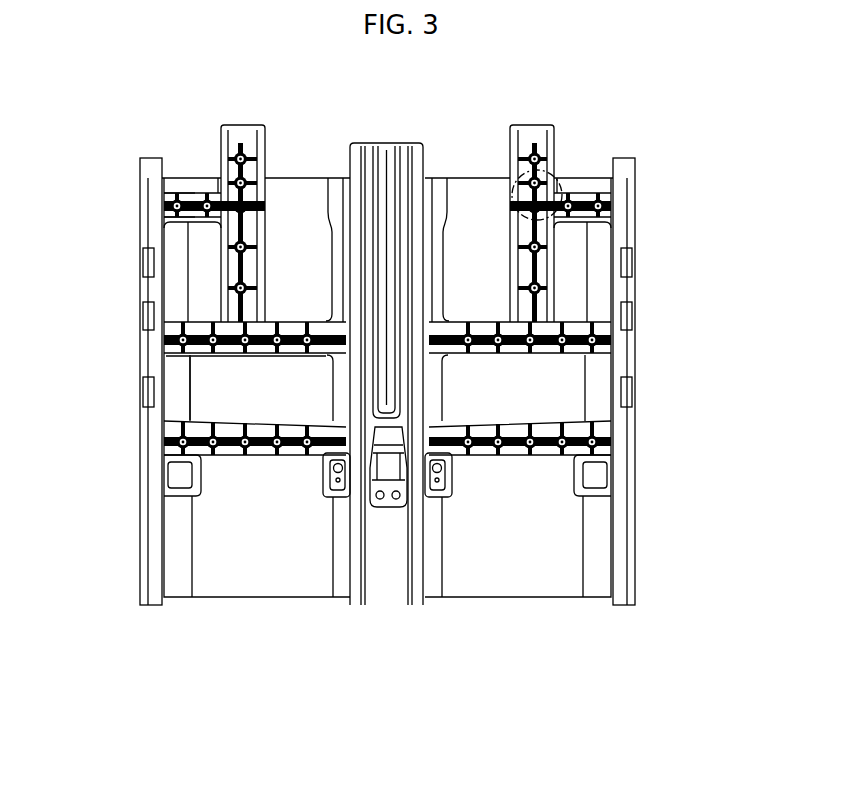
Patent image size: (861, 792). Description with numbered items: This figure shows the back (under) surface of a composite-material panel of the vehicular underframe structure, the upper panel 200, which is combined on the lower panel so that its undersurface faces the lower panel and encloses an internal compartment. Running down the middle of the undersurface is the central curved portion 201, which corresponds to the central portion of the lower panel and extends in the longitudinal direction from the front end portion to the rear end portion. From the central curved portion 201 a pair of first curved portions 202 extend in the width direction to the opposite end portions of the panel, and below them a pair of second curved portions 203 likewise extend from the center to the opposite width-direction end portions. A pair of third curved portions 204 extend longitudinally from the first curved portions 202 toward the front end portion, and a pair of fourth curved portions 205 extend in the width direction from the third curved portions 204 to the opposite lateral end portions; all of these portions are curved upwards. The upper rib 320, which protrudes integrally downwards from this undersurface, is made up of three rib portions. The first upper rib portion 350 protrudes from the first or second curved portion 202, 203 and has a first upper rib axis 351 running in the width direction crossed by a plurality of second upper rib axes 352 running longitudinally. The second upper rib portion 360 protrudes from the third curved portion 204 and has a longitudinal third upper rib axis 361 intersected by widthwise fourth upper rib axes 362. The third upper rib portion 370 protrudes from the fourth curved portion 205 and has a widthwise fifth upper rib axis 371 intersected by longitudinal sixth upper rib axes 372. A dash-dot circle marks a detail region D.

The upper panel 200 is at (624, 630).
The central curved portion 201 is at (378, 158).
The first curved portions 202 is at (573, 332).
The second curved portions 203 is at (577, 432).
The third curved portions 204 is at (542, 273).
The fourth curved portions 205 is at (573, 194).
The upper rib 320 is at (700, 756).
The first upper rib portion 350 is at (286, 370).
The first upper rib axis 351 is at (513, 347).
The second upper rib axes 352 is at (495, 350).
The second upper rib portion 360 is at (249, 268).
The third upper rib axis 361 is at (540, 307).
The fourth upper rib axes 362 is at (531, 283).
The third upper rib portion 370 is at (193, 188).
The fifth upper rib axis 371 is at (165, 215).
The sixth upper rib axes 372 is at (173, 196).
The detail region D is at (556, 168).